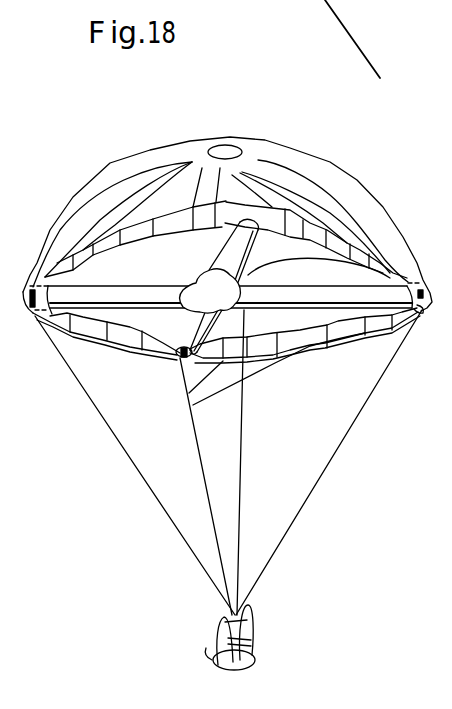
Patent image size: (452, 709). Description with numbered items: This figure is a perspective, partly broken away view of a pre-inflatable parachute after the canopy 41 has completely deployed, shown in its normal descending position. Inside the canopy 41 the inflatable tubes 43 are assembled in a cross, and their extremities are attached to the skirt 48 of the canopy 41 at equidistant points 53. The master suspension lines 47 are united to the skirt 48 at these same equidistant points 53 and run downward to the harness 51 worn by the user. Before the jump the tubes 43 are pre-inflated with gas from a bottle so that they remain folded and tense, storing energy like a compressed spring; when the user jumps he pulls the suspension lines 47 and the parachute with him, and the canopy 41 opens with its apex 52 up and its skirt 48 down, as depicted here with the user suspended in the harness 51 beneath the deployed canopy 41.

The canopy 41 is at (356, 184).
The tubes assembled in cross 43 is at (173, 293).
The master suspension lines 47 is at (331, 455).
The skirt 48 is at (422, 313).
The harness 51 is at (252, 642).
The apex 52 is at (232, 148).
The equidistant points 53 is at (36, 318).